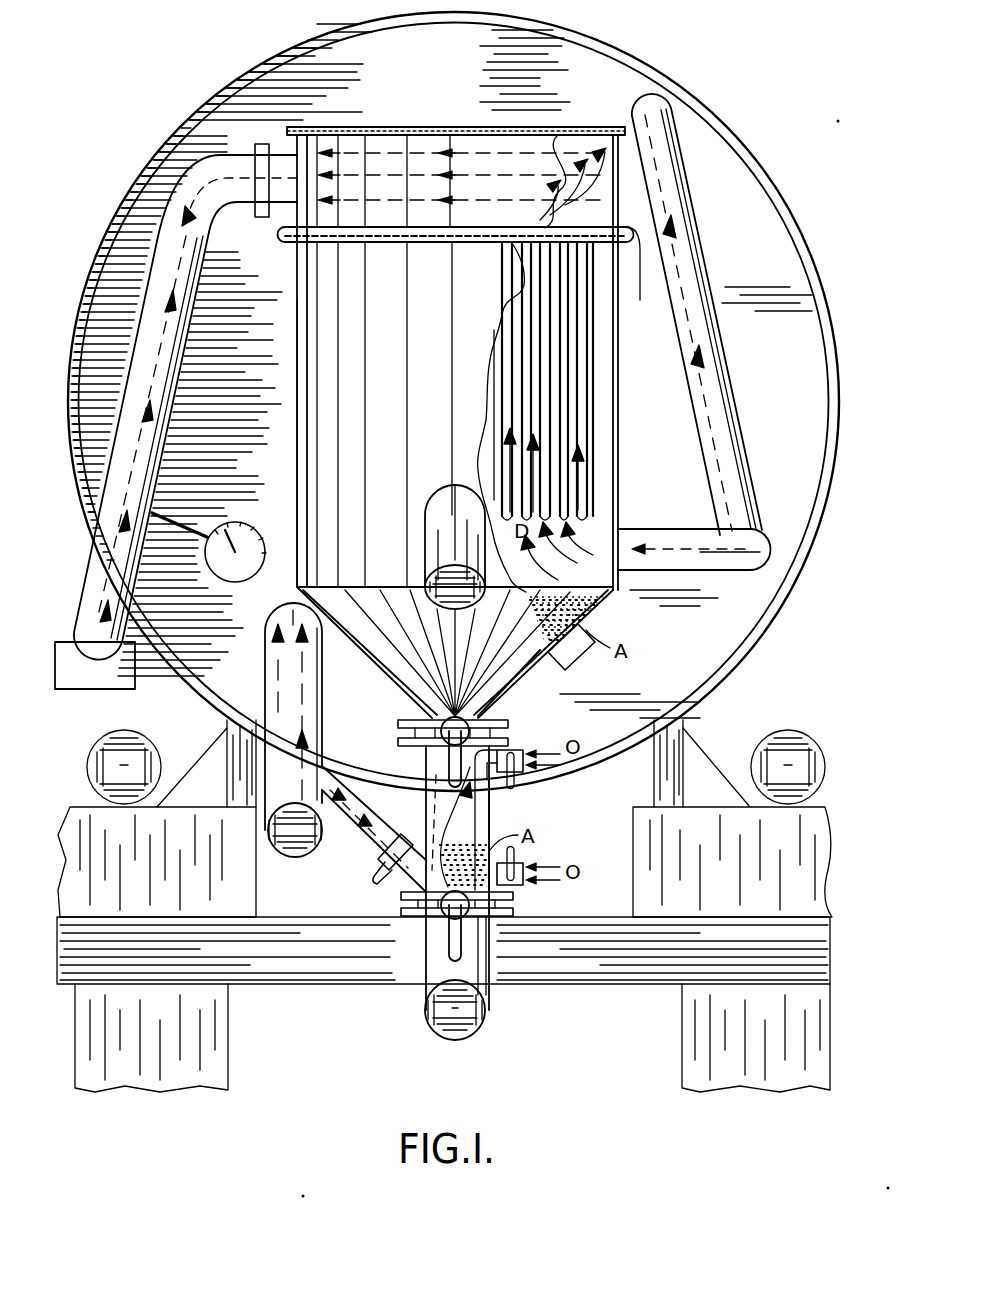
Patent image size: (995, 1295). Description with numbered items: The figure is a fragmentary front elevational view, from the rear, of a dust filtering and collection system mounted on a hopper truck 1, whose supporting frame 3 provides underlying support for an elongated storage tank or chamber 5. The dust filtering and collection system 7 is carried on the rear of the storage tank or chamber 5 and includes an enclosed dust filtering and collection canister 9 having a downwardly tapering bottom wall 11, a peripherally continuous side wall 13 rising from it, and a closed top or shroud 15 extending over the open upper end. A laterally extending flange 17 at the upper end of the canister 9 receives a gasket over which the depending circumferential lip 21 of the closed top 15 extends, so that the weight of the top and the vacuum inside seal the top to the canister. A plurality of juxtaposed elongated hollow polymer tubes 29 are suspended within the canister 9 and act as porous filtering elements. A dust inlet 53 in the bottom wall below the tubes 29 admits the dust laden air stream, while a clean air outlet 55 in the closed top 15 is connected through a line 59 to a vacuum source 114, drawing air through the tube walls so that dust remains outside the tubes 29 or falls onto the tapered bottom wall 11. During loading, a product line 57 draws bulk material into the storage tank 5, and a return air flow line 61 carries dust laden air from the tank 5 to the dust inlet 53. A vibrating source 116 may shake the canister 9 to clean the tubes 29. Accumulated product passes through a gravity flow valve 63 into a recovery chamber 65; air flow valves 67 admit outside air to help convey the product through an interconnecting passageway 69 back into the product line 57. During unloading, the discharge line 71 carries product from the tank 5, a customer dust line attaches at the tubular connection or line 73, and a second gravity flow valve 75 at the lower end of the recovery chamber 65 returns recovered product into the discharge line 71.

The hopper truck 1 is at (808, 616).
The supporting frame 3 is at (598, 893).
The storage tank or chamber 5 is at (798, 397).
The dust filtering and collection system 7 is at (575, 105).
The dust filtering and collection canister 9 is at (290, 378).
The bottom wall 11 is at (420, 652).
The side wall 13 is at (326, 415).
The closed top or shroud 15 is at (426, 170).
The laterally extending flange 17 is at (602, 255).
The depending circumferential lip 21 is at (640, 255).
The hollow polymer tube 29 is at (597, 460).
The dust inlet 53 is at (597, 592).
The clean air outlet 55 is at (310, 125).
The product line 57 is at (285, 787).
The line 59 is at (128, 423).
The return air flow line 61 is at (703, 377).
The gravity flow valve 63 is at (512, 695).
The recovery chamber 65 is at (496, 820).
The air flow valve 67 is at (512, 743).
The interconnecting passageway 69 is at (375, 856).
The discharge line 71 is at (437, 968).
The tubular connection or line 73 is at (440, 520).
The second gravity flow valve 75 is at (493, 983).
The vacuum source 114 is at (66, 690).
The vibrating source 116 is at (586, 662).